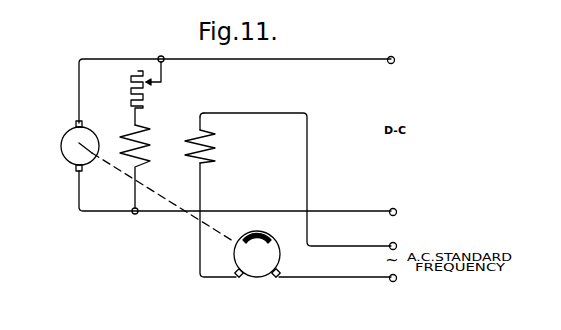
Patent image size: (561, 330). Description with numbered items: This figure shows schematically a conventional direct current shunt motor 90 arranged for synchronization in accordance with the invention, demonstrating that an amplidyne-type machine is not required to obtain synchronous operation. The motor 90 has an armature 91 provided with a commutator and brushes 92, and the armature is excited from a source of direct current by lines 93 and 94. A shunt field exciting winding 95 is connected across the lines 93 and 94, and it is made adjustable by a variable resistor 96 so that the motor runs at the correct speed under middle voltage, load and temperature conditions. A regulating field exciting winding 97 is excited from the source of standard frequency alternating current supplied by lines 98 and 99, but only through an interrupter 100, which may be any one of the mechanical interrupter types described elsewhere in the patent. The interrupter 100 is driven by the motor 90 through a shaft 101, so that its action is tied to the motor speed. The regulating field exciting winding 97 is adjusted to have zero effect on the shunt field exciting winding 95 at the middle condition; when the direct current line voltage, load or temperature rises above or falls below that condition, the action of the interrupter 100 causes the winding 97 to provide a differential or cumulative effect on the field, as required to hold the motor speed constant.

The direct current shunt motor 90 is at (61, 143).
The armature 91 is at (98, 136).
The brushes 92 is at (75, 122).
The line 93 is at (391, 56).
The line 94 is at (393, 208).
The shunt field exciting winding 95 is at (146, 129).
The variable resistor 96 is at (129, 78).
The regulating field exciting winding 97 is at (216, 148).
The line 98 is at (393, 242).
The line 99 is at (393, 282).
The interrupter 100 is at (257, 277).
The shaft 101 is at (194, 217).